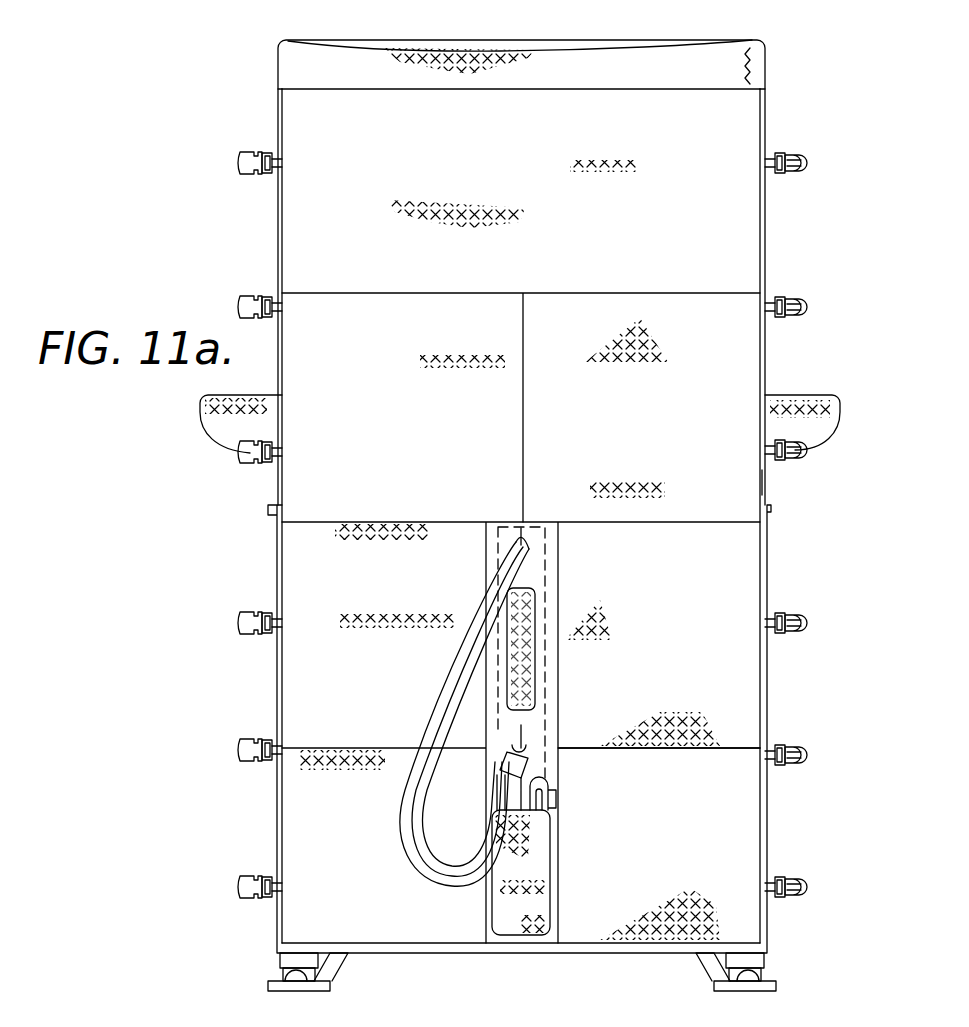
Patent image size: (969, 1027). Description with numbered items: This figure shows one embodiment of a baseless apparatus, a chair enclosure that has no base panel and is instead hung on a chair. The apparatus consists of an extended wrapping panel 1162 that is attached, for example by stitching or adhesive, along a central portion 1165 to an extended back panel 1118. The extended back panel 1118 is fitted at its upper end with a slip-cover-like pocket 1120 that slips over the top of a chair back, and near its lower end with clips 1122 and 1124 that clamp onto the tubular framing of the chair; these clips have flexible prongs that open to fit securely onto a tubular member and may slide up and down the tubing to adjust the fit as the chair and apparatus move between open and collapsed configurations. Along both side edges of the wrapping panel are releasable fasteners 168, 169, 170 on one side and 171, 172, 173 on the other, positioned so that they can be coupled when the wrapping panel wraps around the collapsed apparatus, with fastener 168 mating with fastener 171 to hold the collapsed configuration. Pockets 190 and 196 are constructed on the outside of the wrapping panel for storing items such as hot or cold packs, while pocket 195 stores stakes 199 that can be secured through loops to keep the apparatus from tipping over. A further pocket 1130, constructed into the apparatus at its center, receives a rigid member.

The slip-cover-like pocket 1120 is at (702, 70).
The extended wrapping panel 1162 is at (745, 103).
The extended back panel 1118 is at (766, 136).
The central portion 1165 is at (522, 290).
The pocket 1130 is at (507, 526).
The releasable fastener 168 is at (248, 614).
The releasable fastener 169 is at (248, 748).
The releasable fastener 170 is at (248, 878).
The releasable fastener 171 is at (795, 614).
The releasable fastener 172 is at (795, 748).
The releasable fastener 173 is at (795, 879).
The pocket 190 is at (338, 744).
The pocket 196 is at (584, 746).
The stakes 199 is at (542, 760).
The pocket 195 is at (542, 855).
The clip 1122 is at (281, 958).
The clip 1124 is at (752, 960).